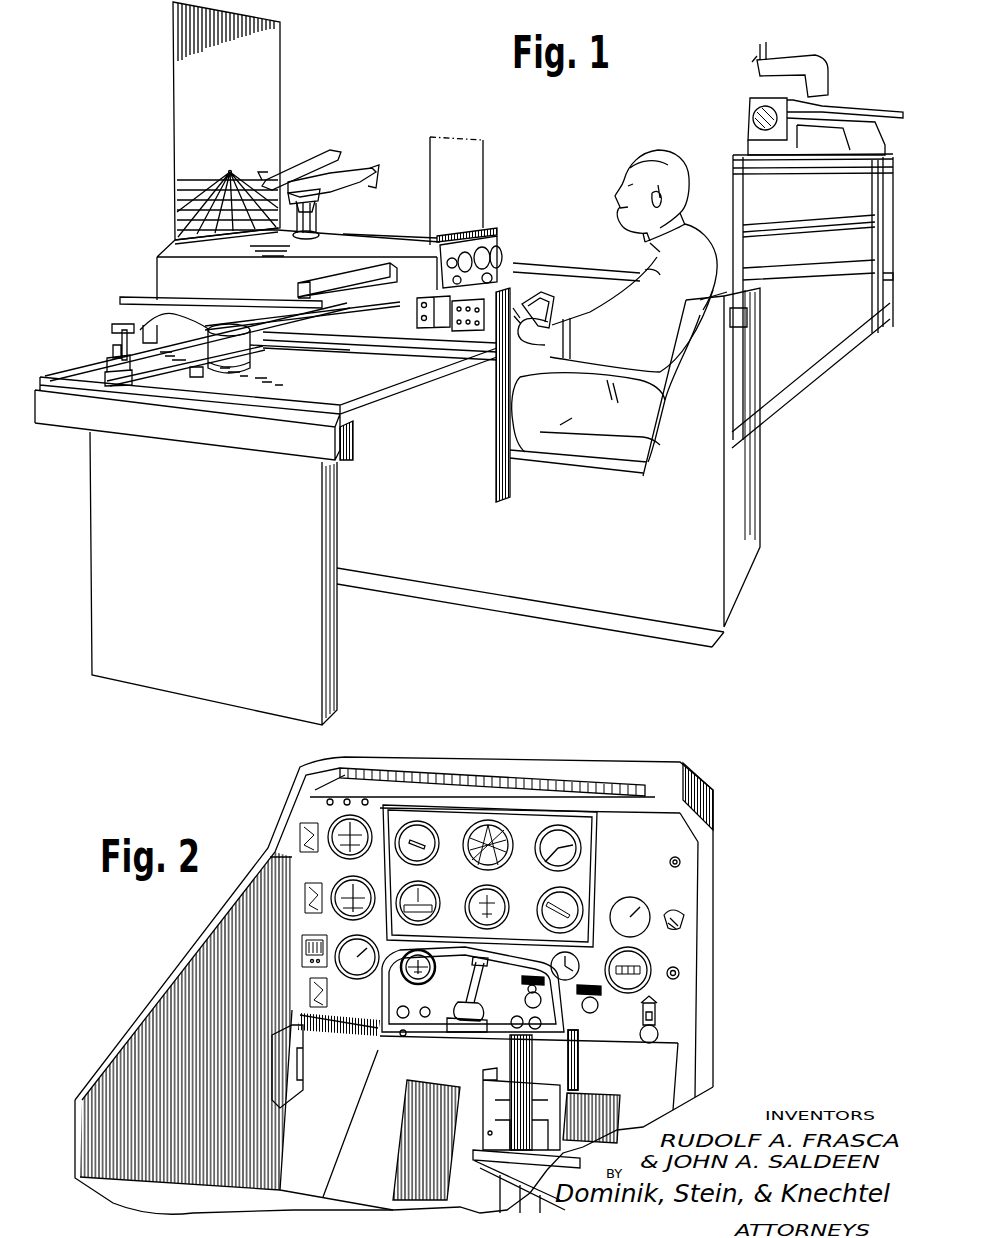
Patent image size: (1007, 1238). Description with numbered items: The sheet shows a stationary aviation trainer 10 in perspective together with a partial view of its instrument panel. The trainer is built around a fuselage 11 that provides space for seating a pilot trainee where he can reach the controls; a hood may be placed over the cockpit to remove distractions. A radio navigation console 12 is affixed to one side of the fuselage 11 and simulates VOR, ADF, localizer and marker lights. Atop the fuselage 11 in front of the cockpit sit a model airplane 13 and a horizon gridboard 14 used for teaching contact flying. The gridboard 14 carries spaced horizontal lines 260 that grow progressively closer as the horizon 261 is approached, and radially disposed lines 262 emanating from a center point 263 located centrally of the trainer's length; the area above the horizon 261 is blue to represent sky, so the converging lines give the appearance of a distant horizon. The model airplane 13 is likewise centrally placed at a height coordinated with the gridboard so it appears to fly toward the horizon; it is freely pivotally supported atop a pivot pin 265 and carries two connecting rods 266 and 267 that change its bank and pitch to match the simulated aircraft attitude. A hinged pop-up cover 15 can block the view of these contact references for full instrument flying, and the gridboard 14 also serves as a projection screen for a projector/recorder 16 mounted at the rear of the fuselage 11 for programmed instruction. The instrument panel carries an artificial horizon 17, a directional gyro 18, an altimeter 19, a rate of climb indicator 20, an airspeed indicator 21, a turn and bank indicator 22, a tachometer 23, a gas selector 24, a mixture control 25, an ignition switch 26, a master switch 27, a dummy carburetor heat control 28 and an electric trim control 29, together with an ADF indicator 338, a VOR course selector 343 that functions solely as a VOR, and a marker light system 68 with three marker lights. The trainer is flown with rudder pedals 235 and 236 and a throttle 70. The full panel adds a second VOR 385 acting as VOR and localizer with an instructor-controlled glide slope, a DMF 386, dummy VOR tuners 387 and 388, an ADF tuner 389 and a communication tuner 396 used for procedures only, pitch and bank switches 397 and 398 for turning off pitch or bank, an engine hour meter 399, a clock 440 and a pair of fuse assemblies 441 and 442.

In FIG. 1, the stationary aviation trainer 10 is at (402, 100).
In FIG. 1, the fuselage 11 is at (692, 510).
In FIG. 1, the radio navigation console 12 is at (73, 358).
In FIG. 1, the model airplane 13 is at (338, 172).
In FIG. 1, the horizon gridboard 14 is at (283, 63).
In FIG. 1, the pop-up cover 15 is at (408, 228).
In FIG. 1, the projector/recorder 16 is at (850, 98).
In FIG. 1, the horizontal lines 260 is at (173, 187).
In FIG. 1, the horizon 261 is at (190, 171).
In FIG. 1, the radially disposed lines 262 is at (187, 228).
In FIG. 1, the center point 263 is at (230, 172).
In FIG. 1, the pivot pin 265 is at (312, 198).
In FIG. 1, the connecting rod 266 is at (300, 215).
In FIG. 1, the connecting rod 267 is at (318, 221).
In FIG. 2, the marker light system 68 is at (345, 757).
In FIG. 2, the artificial horizon 17 is at (508, 855).
In FIG. 2, the directional gyro 18 is at (513, 903).
In FIG. 2, the altimeter 19 is at (580, 838).
In FIG. 2, the rate of climb indicator 20 is at (567, 890).
In FIG. 2, the airspeed indicator 21 is at (428, 826).
In FIG. 2, the turn and bank indicator 22 is at (425, 880).
In FIG. 2, the tachometer 23 is at (636, 898).
In FIG. 2, the gas selector 24 is at (300, 1063).
In FIG. 2, the mixture control 25 is at (528, 1002).
In FIG. 2, the ignition switch 26 is at (690, 910).
In FIG. 2, the master switch 27 is at (680, 862).
In FIG. 2, the dummy carburetor heat control 28 is at (592, 1014).
In FIG. 2, the electric trim control 29 is at (685, 973).
In FIG. 2, the throttle 70 is at (662, 1012).
In FIG. 2, the rudder pedal 235 is at (428, 1092).
In FIG. 2, the rudder pedal 236 is at (593, 1095).
In FIG. 2, the ADF indicator 338 is at (343, 977).
In FIG. 2, the VOR course selector 343 is at (333, 890).
In FIG. 2, the second VOR 385 is at (332, 827).
In FIG. 2, the DMF 386 is at (367, 1020).
In FIG. 2, the VOR tuner 387 is at (300, 830).
In FIG. 2, the VOR tuner 388 is at (305, 892).
In FIG. 2, the ADF tuner 389 is at (310, 935).
In FIG. 2, the communication tuner 396 is at (312, 985).
In FIG. 2, the pitch switch 397 is at (403, 1037).
In FIG. 2, the bank switch 398 is at (438, 1006).
In FIG. 2, the engine hour meter 399 is at (648, 988).
In FIG. 2, the clock 440 is at (580, 960).
In FIG. 2, the fuse assembly 441 is at (532, 1035).
In FIG. 2, the fuse assembly 442 is at (587, 1035).